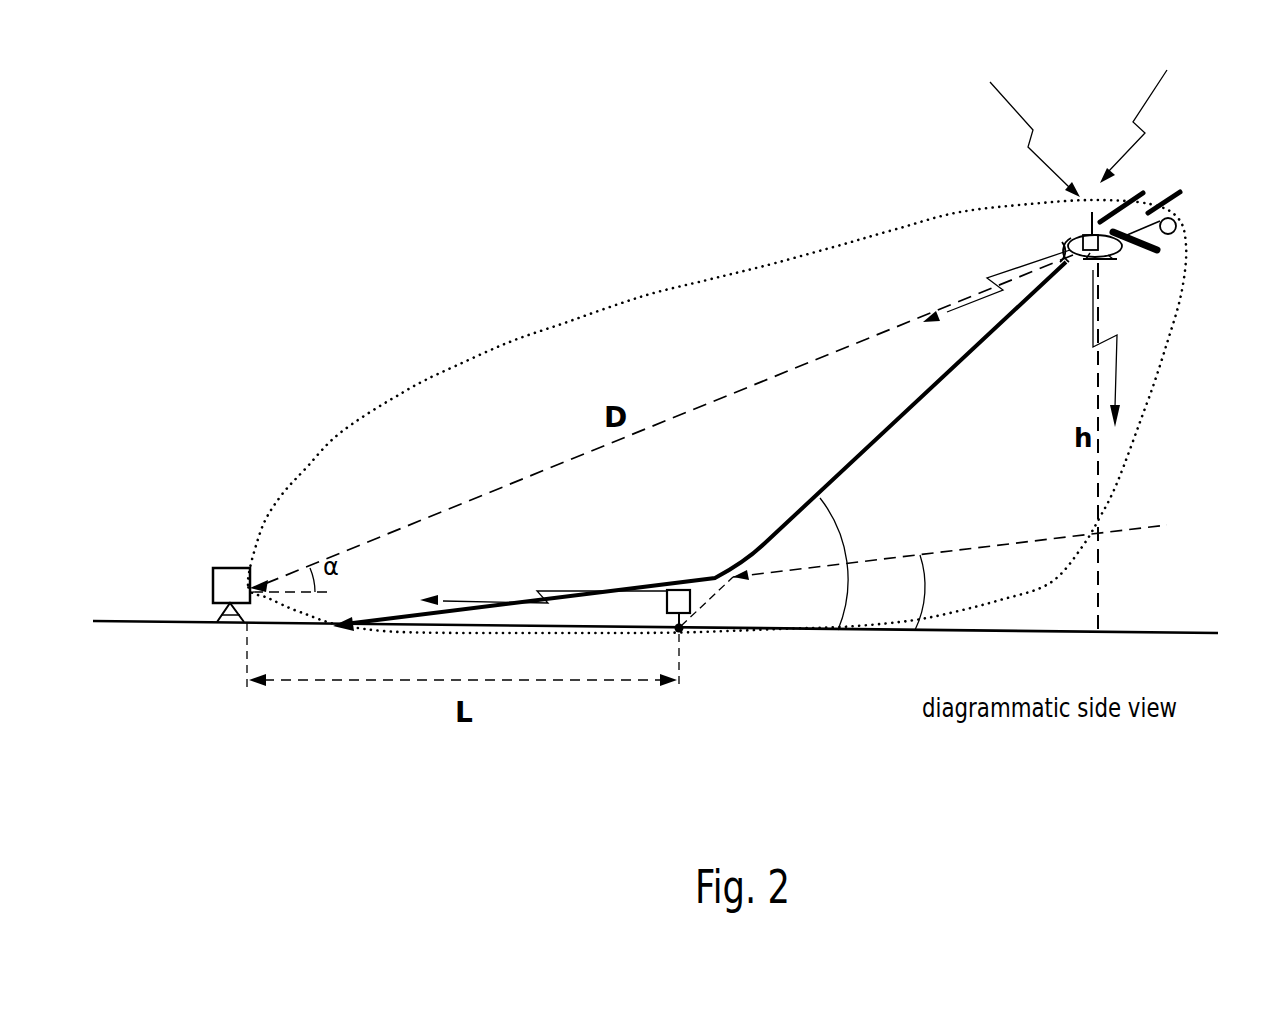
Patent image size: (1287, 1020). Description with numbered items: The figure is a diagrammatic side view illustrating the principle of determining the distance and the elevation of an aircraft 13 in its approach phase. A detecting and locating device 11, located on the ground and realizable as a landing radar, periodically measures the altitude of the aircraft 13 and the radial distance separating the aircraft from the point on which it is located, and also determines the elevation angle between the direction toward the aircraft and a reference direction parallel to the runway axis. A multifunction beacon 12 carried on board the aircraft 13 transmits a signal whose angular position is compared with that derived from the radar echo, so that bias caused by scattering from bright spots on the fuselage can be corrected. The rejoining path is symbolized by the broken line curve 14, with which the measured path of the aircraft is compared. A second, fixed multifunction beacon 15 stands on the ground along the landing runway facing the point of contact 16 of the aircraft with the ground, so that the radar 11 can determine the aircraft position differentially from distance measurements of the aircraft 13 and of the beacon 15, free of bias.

The detecting and locating device 11 is at (228, 580).
The multifunction beacon 12 is at (1093, 232).
The aircraft 13 is at (1171, 227).
The rejoining path 14 is at (878, 443).
The second multifunction beacon 15 is at (678, 590).
The point of contact 16 is at (681, 633).